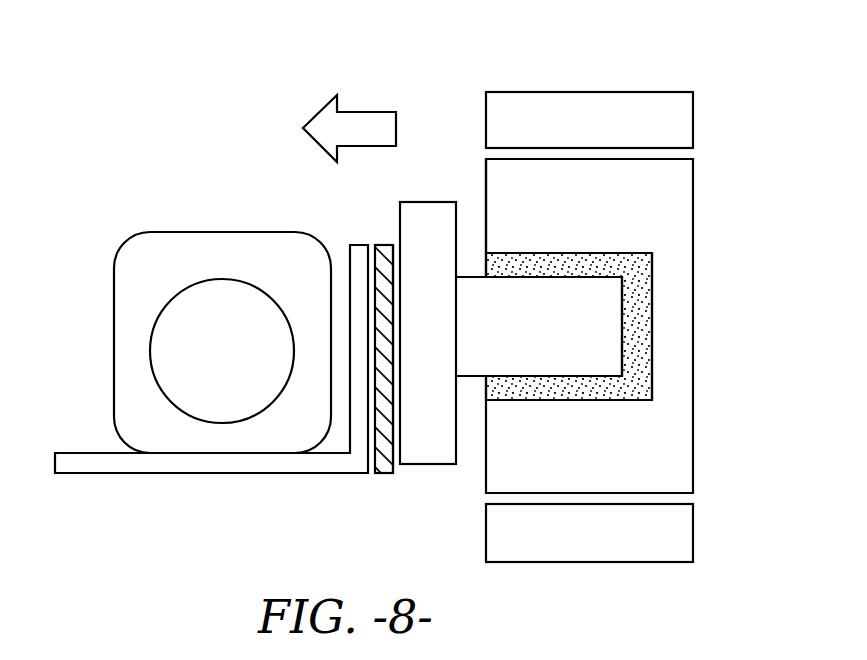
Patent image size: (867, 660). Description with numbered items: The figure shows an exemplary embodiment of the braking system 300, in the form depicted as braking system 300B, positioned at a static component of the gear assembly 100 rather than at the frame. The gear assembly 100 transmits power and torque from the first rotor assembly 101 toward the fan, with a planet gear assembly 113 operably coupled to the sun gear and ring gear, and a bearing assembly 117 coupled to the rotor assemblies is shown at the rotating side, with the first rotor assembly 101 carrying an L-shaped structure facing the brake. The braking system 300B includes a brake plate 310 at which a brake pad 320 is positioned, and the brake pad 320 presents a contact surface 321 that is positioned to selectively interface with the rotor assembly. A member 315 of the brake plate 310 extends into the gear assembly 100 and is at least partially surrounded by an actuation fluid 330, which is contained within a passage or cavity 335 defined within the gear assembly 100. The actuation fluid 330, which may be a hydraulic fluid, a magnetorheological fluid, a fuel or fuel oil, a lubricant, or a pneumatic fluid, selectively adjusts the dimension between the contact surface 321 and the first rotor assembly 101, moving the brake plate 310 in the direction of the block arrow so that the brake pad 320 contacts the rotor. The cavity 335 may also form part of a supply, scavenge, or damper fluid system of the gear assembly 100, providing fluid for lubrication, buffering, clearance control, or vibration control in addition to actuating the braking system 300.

The braking system 300 is at (183, 108).
The braking system 300B is at (503, 60).
The gear assembly 100 is at (628, 78).
The planet gear assembly 113 is at (470, 187).
The bearing assembly 117 is at (182, 213).
The first rotor assembly 101 is at (358, 245).
The contact surface 321 is at (378, 263).
The brake pad 320 is at (385, 475).
The brake plate 310 is at (433, 464).
The actuation fluid 330 is at (540, 262).
The cavity 335 is at (652, 283).
The member 315 is at (600, 315).